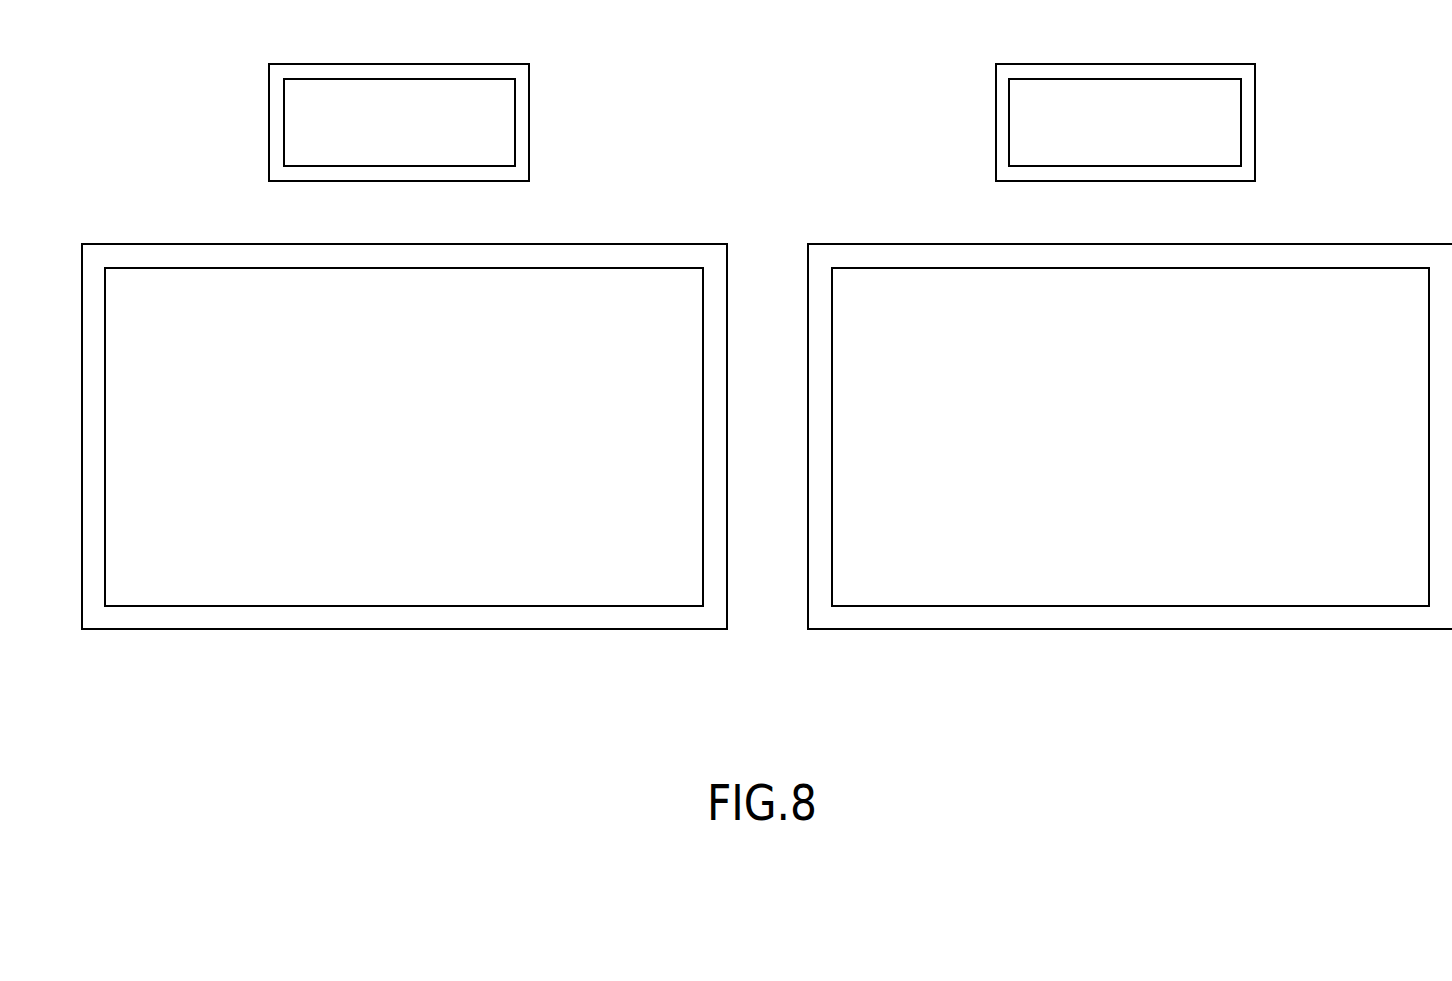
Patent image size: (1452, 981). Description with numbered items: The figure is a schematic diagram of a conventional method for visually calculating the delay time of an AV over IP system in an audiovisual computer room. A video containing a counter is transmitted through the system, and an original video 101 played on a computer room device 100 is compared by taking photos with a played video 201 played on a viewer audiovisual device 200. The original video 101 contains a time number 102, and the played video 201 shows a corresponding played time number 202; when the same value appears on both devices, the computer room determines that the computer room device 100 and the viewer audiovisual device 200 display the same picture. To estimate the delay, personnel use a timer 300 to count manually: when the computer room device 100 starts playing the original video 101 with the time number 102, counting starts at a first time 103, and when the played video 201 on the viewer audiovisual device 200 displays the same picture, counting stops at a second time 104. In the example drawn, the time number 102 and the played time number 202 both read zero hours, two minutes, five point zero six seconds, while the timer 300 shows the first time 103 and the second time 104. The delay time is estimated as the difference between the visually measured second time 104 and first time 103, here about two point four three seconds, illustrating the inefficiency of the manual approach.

The computer room device 100 is at (263, 244).
The original video 101 is at (556, 290).
The time number 102 is at (385, 318).
The first time 103 is at (440, 107).
The second time 104 is at (1167, 105).
The viewer audiovisual device 200 is at (955, 244).
The played video 201 is at (1292, 282).
The played time number 202 is at (1112, 317).
The timer 300 is at (529, 122).